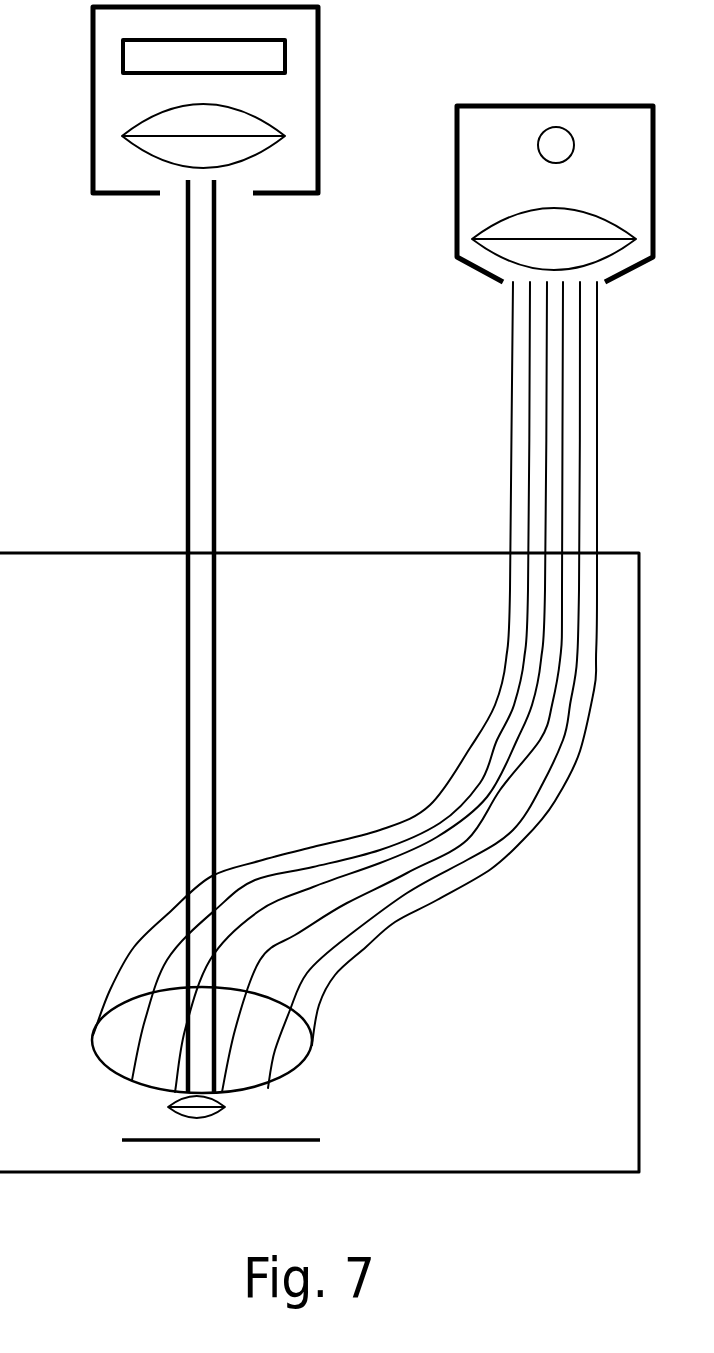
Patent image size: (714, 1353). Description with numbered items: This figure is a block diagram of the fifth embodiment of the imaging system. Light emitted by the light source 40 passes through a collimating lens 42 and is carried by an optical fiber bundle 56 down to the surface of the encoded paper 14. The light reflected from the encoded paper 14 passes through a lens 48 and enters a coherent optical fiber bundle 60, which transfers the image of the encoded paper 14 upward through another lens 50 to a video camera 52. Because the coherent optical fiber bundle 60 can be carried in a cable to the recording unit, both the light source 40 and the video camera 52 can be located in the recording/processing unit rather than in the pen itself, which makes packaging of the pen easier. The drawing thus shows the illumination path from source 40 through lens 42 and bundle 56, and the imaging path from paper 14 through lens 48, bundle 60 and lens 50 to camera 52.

The encoded paper 14 is at (295, 1140).
The light source 40 is at (540, 158).
The collimating lens 42 is at (600, 216).
The lens 48 is at (170, 1112).
The lens 50 is at (148, 118).
The video camera 52 is at (250, 74).
The optical fiber bundle 56 is at (610, 375).
The coherent optical fiber bundle 60 is at (186, 724).